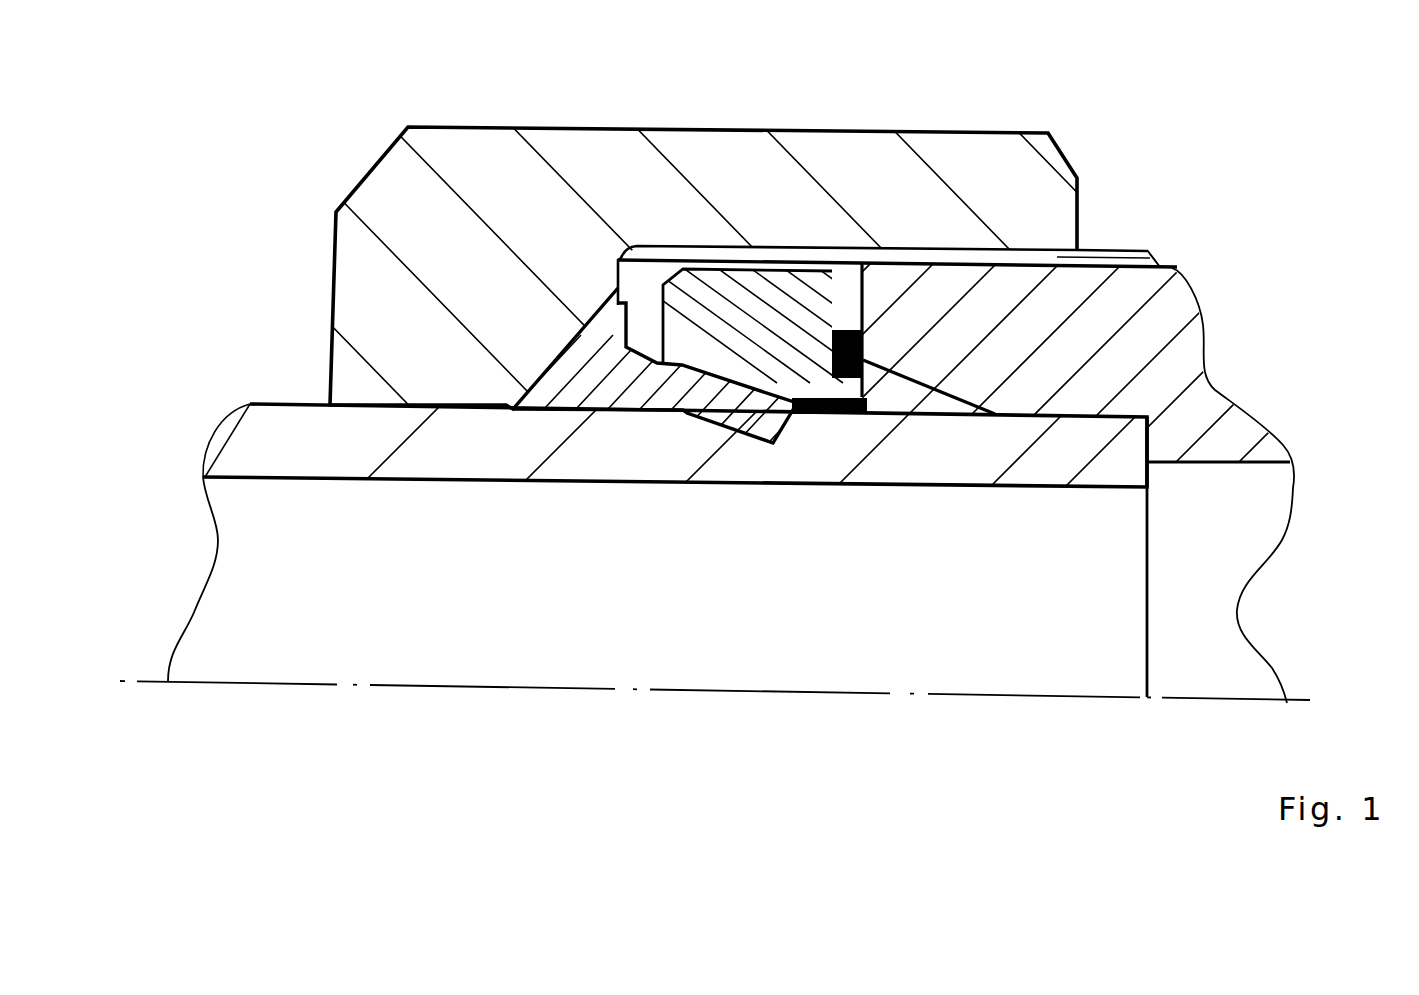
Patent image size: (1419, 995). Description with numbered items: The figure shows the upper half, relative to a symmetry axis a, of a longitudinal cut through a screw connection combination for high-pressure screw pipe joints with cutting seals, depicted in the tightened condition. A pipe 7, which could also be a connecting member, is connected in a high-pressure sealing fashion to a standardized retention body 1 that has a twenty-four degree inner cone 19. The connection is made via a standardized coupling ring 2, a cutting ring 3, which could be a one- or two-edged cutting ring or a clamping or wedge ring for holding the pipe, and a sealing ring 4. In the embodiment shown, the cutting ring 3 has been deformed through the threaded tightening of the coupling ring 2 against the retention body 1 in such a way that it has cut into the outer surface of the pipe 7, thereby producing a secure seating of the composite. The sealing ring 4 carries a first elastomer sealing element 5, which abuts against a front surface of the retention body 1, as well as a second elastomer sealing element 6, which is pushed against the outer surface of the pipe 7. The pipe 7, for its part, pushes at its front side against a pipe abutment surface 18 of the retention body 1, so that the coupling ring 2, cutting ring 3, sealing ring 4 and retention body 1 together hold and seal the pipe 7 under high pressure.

The retention body 1 is at (1138, 293).
The coupling ring 2 is at (423, 172).
The cutting ring 3 is at (583, 355).
The sealing ring 4 is at (707, 300).
The first elastomer sealing element 5 is at (843, 330).
The second elastomer sealing element 6 is at (822, 415).
The pipe 7 is at (233, 440).
The pipe abutment surface 18 is at (1143, 438).
The inner cone 19 is at (922, 387).
The symmetry axis a is at (137, 681).